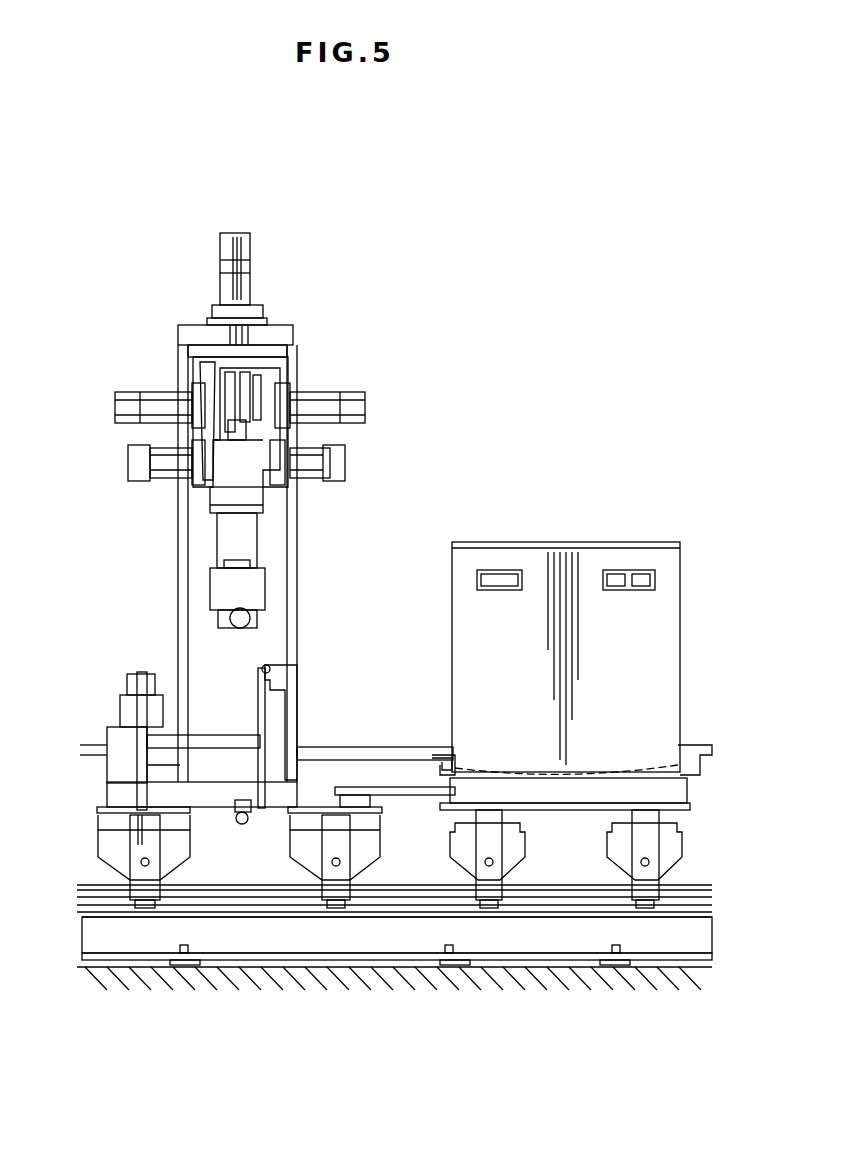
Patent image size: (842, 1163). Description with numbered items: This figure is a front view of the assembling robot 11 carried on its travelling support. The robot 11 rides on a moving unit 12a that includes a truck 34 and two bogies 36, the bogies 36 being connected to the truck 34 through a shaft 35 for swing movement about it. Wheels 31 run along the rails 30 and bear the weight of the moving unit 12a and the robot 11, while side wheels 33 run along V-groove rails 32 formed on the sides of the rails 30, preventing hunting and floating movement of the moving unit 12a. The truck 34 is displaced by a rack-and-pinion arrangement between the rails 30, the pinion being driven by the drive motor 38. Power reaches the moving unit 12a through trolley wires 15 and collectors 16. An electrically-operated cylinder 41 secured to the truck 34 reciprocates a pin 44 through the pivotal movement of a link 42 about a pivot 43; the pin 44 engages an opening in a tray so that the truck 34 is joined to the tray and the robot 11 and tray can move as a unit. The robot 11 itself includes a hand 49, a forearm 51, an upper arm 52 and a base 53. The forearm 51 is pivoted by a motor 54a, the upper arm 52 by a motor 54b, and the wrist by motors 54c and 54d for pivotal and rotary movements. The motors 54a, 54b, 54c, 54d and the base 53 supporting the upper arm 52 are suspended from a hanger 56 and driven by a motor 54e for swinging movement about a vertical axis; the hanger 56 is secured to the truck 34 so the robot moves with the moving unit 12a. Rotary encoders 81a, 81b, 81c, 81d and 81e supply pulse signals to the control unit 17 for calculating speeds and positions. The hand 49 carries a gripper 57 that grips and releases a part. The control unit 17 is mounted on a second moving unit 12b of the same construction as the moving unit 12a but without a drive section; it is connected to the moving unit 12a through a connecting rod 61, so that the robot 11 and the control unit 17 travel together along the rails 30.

The rotary encoder 81e is at (238, 240).
The motor 54e is at (250, 290).
The hanger 56 is at (188, 328).
The base 53 is at (198, 360).
The assembling robot 11 is at (262, 380).
The motor 54a is at (312, 398).
The motor 54b is at (168, 400).
The motor 54c is at (312, 480).
The motor 54d is at (172, 478).
The rotary encoder 81a is at (362, 408).
The rotary encoder 81b is at (115, 408).
The rotary encoder 81c is at (345, 464).
The rotary encoder 81d is at (128, 466).
The upper arm 52 is at (238, 500).
The forearm 51 is at (248, 548).
The hand 49 is at (212, 580).
The gripper 57 is at (215, 608).
The control unit 17 is at (618, 542).
The trolley wires 15 is at (380, 747).
The collectors 16 is at (435, 757).
The pivot 43 is at (278, 740).
The pin 44 is at (262, 668).
The drive motor 38 is at (118, 735).
The truck 34 is at (203, 800).
The connecting rod 61 is at (420, 797).
The shaft 35 is at (355, 808).
The link 42 is at (248, 812).
The electrically-operated cylinder 41 is at (242, 825).
The wheels 31 is at (108, 875).
The moving unit 12a is at (100, 803).
The moving unit 12b is at (678, 814).
The bogies 36 is at (515, 845).
The side wheels 33 is at (482, 905).
The V-groove rails 32 is at (526, 910).
The rails 30 is at (340, 960).